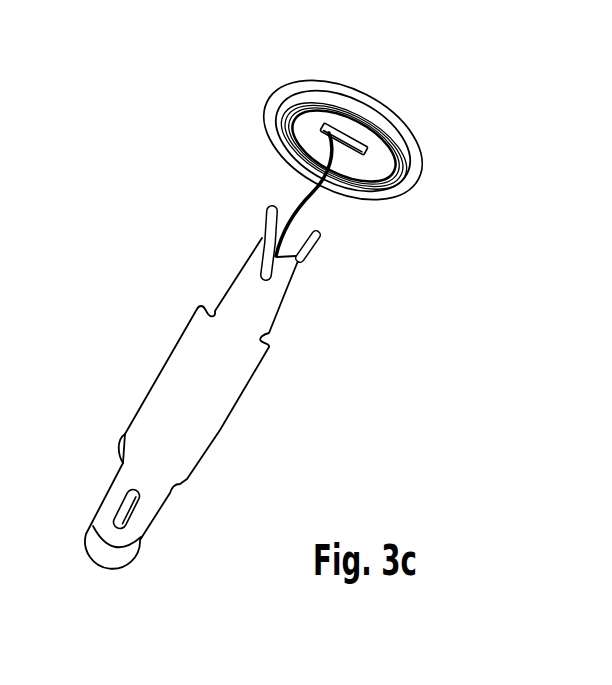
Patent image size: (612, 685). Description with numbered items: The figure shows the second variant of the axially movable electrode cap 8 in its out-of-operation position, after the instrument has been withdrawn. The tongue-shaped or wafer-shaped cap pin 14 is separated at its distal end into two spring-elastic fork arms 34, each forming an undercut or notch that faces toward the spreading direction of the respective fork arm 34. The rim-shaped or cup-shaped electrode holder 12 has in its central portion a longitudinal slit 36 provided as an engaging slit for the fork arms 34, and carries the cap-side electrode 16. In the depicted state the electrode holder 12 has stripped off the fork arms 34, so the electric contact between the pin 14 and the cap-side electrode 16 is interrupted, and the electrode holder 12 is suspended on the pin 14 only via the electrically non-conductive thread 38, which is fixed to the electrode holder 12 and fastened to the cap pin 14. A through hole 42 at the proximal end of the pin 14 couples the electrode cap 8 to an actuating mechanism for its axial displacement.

The electrode cap 8 is at (281, 315).
The electrode holder 12 is at (361, 138).
The cap pin 14 is at (182, 393).
The cap-side electrode 16 is at (393, 190).
The fork arms 34 is at (274, 206).
The longitudinal slit 36 is at (360, 141).
The thread 38 is at (312, 196).
The through hole 42 is at (127, 508).